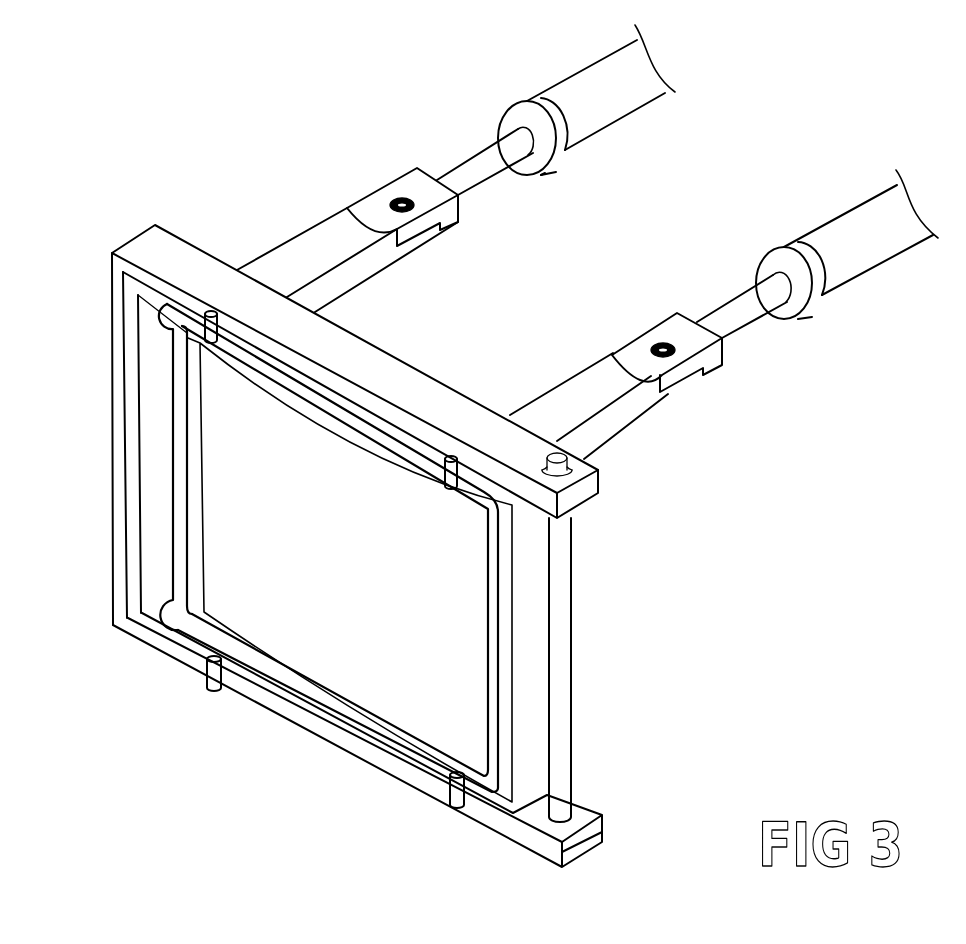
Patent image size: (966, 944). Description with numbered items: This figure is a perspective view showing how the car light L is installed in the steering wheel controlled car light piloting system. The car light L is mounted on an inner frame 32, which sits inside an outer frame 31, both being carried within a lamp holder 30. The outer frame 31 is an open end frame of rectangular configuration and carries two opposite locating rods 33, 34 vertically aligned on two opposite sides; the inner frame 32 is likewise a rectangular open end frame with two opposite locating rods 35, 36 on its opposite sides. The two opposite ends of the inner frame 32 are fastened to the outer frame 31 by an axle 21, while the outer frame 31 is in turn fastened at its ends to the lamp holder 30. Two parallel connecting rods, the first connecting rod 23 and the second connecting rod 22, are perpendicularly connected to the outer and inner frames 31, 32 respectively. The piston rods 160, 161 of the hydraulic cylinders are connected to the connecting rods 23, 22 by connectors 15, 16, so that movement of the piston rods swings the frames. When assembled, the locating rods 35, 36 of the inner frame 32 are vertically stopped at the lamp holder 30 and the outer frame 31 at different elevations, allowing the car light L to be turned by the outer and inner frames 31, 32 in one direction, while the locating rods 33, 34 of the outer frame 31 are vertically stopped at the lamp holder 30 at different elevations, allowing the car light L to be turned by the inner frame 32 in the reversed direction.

The connector 15 is at (678, 327).
The connector 16 is at (412, 178).
The axle 21 is at (177, 438).
The second connecting rod 22 is at (388, 267).
The first connecting rod 23 is at (627, 428).
The lamp holder 30 is at (118, 626).
The outer frame 31 is at (372, 745).
The inner frame 32 is at (323, 707).
The locating rod 33 is at (212, 690).
The locating rod 34 is at (212, 311).
The locating rod 35 is at (452, 456).
The locating rod 36 is at (452, 807).
The piston rod 160 is at (740, 320).
The piston rod 161 is at (475, 177).
The car light L is at (305, 648).